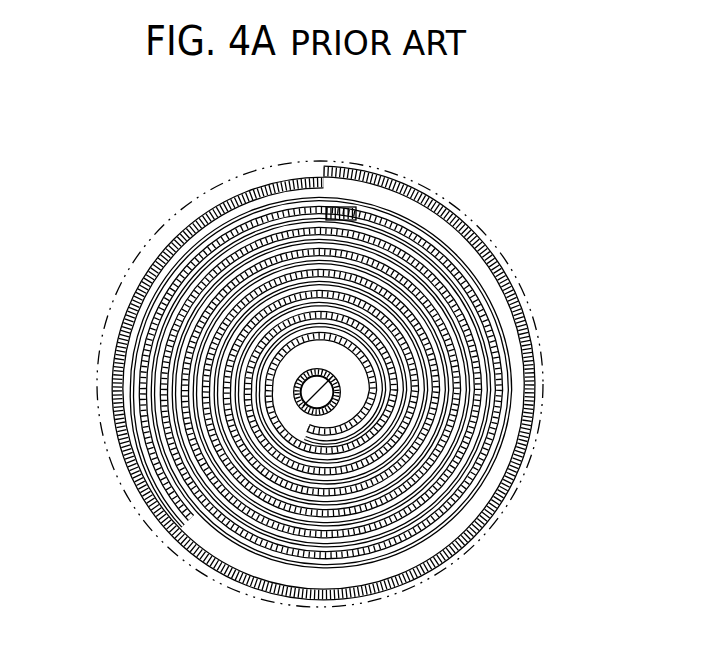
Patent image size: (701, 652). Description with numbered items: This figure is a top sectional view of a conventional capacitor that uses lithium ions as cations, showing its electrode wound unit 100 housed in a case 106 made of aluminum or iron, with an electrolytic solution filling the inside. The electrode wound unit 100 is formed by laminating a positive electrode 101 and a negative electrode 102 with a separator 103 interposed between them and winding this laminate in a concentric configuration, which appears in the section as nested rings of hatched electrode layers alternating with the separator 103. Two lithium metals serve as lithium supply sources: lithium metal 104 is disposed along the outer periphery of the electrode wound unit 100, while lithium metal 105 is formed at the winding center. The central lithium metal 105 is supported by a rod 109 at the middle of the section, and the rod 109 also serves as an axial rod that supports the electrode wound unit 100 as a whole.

The electrode wound unit 100 is at (446, 165).
The positive electrode 101 is at (352, 208).
The negative electrode 102 is at (503, 357).
The separator 103 is at (241, 236).
The lithium metal 104 is at (146, 266).
The lithium metal 105 is at (286, 397).
The case 106 is at (485, 515).
The rod 109 is at (307, 388).